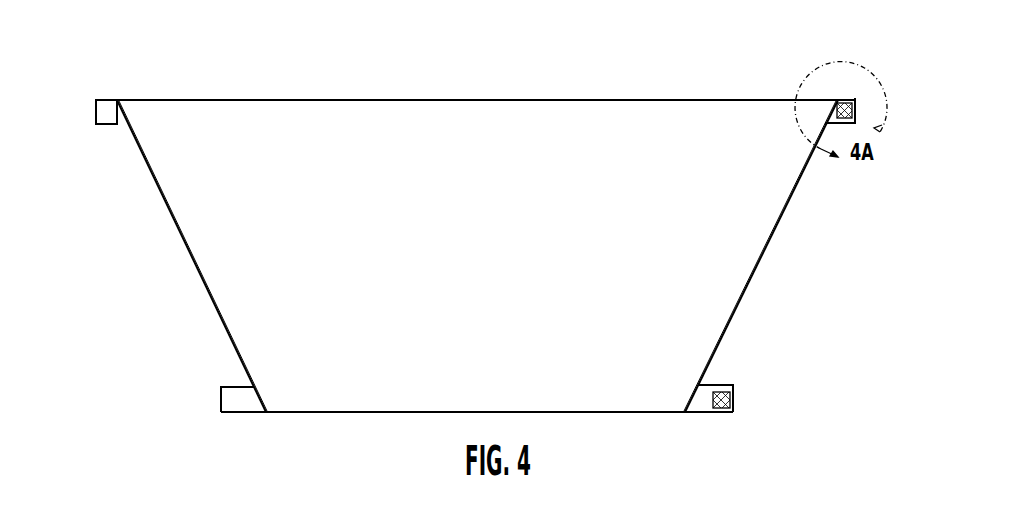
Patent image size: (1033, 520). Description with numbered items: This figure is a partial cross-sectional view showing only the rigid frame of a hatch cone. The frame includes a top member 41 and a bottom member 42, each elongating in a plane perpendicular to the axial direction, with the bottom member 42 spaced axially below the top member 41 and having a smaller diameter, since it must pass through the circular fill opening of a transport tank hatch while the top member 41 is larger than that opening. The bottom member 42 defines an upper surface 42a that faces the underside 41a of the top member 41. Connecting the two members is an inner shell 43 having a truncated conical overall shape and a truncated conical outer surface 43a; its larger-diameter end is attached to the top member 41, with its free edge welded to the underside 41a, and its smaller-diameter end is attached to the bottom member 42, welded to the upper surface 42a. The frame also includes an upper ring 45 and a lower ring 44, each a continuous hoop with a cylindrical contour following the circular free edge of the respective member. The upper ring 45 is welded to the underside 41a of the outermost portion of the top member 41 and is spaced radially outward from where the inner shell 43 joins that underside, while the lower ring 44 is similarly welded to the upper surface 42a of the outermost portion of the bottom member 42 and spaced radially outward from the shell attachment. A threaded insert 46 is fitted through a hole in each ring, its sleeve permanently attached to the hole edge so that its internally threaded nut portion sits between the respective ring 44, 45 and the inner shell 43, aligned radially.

The top member 41 is at (397, 99).
The underside 41a is at (540, 101).
The bottom member 42 is at (390, 413).
The upper surface 42a is at (433, 411).
The inner shell 43 is at (188, 246).
The truncated conical outer surface 43a is at (192, 268).
The lower ring 44 is at (248, 413).
The upper ring 45 is at (117, 125).
The threaded insert 46 is at (842, 103).